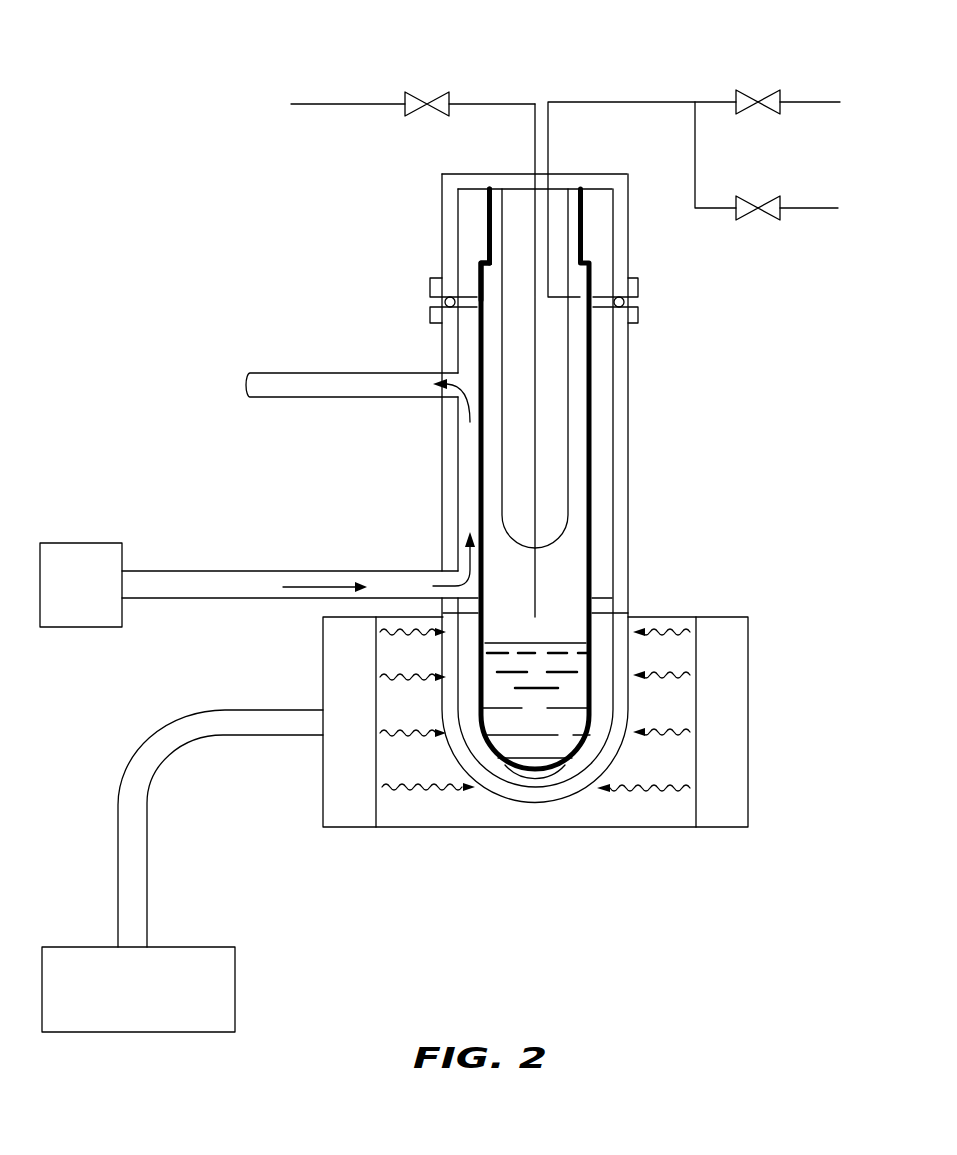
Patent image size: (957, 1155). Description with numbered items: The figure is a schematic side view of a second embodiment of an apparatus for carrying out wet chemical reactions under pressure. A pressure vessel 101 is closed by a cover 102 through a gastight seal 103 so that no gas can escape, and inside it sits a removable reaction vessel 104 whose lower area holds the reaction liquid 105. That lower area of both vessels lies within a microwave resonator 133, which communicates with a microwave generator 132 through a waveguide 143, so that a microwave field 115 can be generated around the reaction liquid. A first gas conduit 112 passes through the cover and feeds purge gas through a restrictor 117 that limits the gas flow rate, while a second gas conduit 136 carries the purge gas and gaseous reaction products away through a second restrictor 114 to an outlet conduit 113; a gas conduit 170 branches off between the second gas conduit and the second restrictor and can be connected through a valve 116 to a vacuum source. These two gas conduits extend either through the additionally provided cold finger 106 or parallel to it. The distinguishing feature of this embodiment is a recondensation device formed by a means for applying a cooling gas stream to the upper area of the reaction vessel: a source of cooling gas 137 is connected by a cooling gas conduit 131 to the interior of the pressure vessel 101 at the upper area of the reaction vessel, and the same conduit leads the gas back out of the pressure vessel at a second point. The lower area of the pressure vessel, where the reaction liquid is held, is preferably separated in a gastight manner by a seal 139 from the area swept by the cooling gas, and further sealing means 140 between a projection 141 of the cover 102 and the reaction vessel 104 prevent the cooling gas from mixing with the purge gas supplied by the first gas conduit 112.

The pressure vessel 101 is at (630, 510).
The cover 102 is at (513, 173).
The gastight seal 103 is at (630, 301).
The reaction vessel 104 is at (592, 430).
The reaction liquid 105 is at (525, 803).
The cold finger 106 is at (568, 372).
The first gas conduit 112 is at (343, 103).
The outlet conduit 113 is at (827, 102).
The second restrictor 114 is at (765, 92).
The microwave field 115 is at (670, 810).
The valve 116 is at (752, 220).
The restrictor 117 is at (427, 94).
The cooling gas conduit 131 is at (347, 373).
The microwave generator 132 is at (207, 1002).
The microwave resonator 133 is at (347, 690).
The second gas conduit 136 is at (617, 102).
The source of cooling gas 137 is at (90, 543).
The seal 139 is at (602, 607).
The further sealing means 140 is at (478, 265).
The projection 141 is at (490, 220).
The waveguide 143 is at (147, 742).
The gas conduit 170 is at (815, 208).